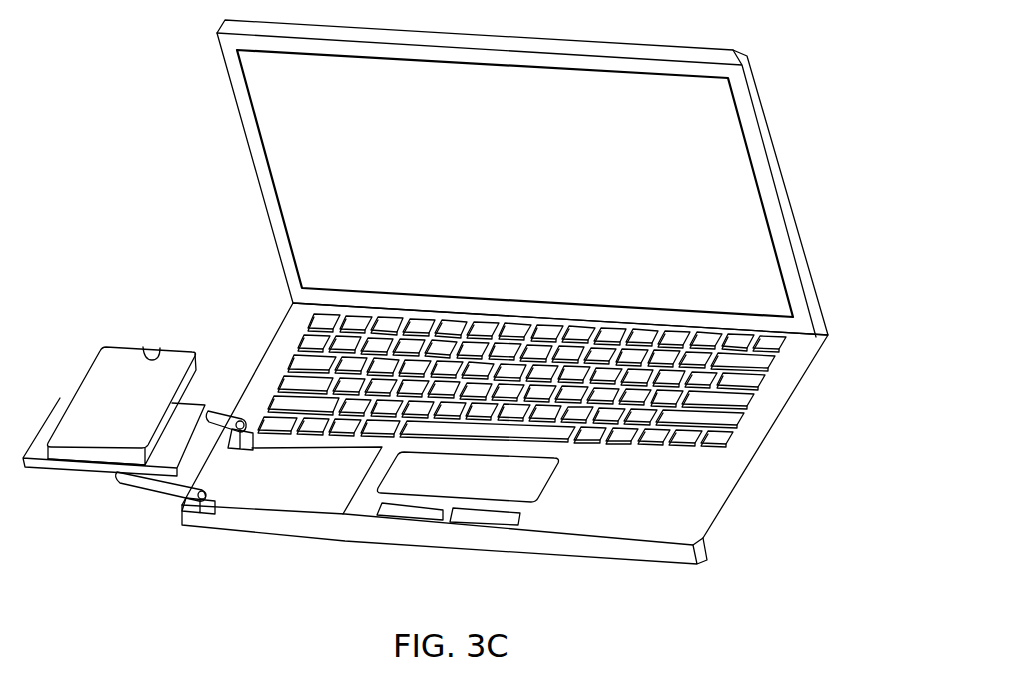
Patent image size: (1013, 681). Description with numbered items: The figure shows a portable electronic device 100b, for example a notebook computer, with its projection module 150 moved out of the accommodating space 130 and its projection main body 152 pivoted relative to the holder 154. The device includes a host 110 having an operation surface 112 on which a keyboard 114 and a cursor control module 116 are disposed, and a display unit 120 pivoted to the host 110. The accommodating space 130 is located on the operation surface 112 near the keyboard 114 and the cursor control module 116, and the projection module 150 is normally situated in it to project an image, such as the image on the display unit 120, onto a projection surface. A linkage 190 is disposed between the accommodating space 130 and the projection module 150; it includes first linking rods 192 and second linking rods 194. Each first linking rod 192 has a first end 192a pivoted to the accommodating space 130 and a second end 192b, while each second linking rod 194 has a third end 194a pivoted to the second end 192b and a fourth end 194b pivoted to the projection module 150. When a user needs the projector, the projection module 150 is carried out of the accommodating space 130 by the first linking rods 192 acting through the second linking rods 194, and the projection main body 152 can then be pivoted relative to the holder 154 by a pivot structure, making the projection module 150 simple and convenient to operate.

The portable electronic device 100b is at (537, 316).
The host 110 is at (537, 458).
The operation surface 112 is at (707, 480).
The keyboard 114 is at (730, 428).
The cursor control module 116 is at (537, 483).
The display unit 120 is at (743, 198).
The accommodating space 130 is at (301, 499).
The projection module 150 is at (111, 422).
The projection main body 152 is at (120, 362).
The holder 154 is at (42, 470).
The linkage 190 is at (155, 529).
The first linking rod 192 is at (202, 518).
The first end 192a is at (252, 448).
The second end 192b is at (205, 509).
The second linking rod 194 is at (151, 513).
The third end 194a is at (228, 436).
The fourth end 194b is at (122, 478).